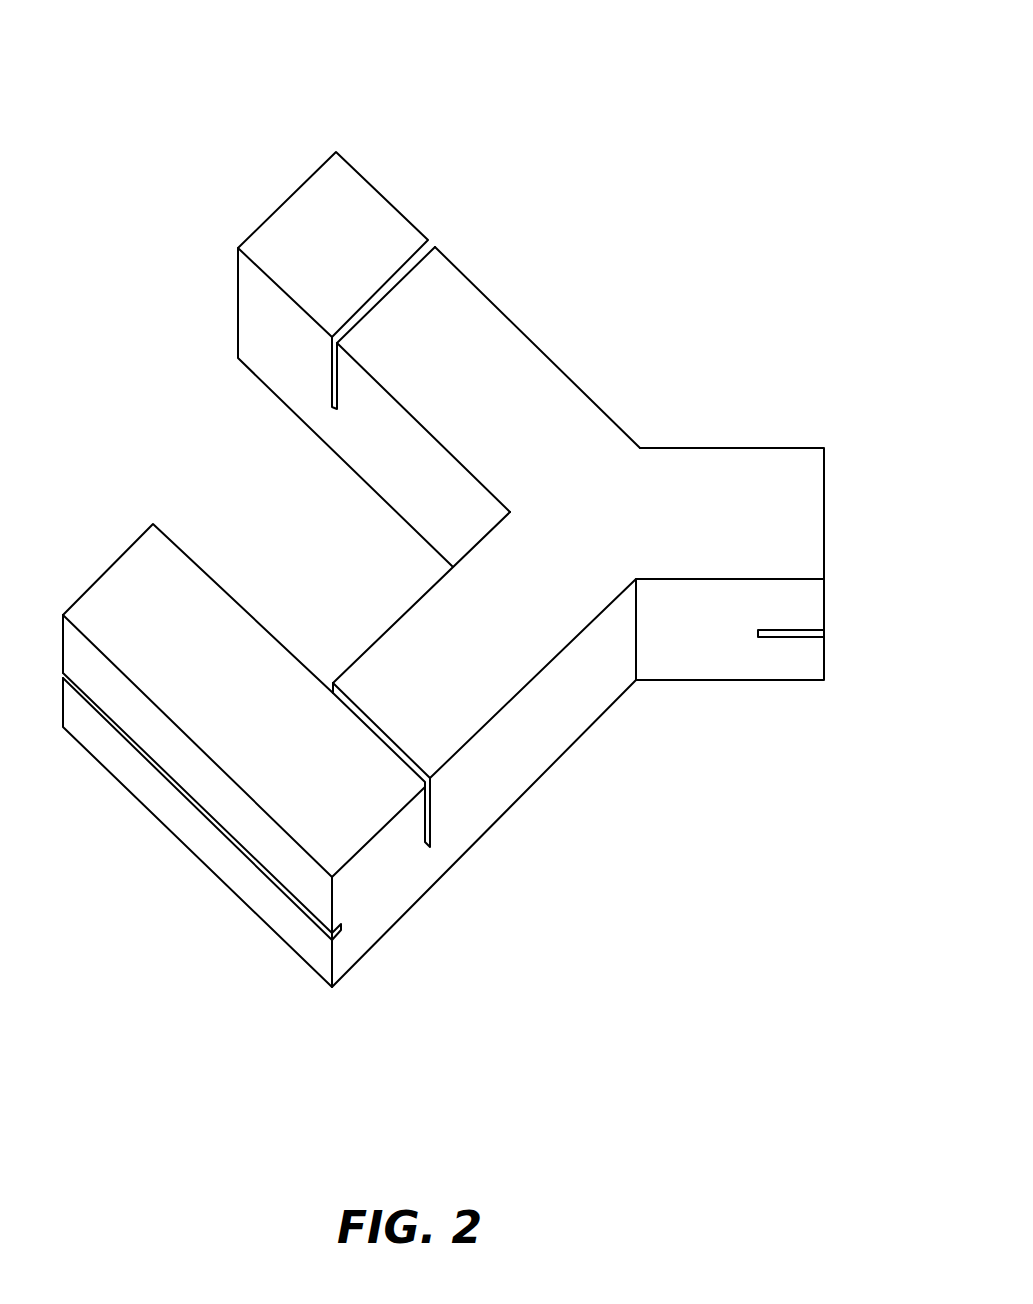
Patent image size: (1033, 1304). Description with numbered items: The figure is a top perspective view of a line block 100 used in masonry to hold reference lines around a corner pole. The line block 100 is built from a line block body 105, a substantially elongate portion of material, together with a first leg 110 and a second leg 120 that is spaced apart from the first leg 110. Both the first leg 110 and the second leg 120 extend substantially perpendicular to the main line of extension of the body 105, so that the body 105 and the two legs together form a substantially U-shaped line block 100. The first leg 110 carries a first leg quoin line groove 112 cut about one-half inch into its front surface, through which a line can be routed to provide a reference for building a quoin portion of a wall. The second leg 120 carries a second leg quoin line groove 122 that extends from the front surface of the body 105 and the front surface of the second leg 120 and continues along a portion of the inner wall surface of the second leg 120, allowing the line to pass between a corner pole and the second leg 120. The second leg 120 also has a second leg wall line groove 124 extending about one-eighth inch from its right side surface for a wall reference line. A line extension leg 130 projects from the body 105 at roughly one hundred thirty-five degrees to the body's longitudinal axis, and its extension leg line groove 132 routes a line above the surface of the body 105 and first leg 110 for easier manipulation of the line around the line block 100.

The line block 100 is at (186, 46).
The line block body 105 is at (541, 740).
The first leg 110 is at (466, 335).
The first leg quoin line groove 112 is at (324, 377).
The second leg 120 is at (150, 611).
The second leg quoin line groove 122 is at (438, 821).
The second leg wall line groove 124 is at (191, 809).
The line extension leg 130 is at (725, 469).
The extension leg line groove 132 is at (804, 641).